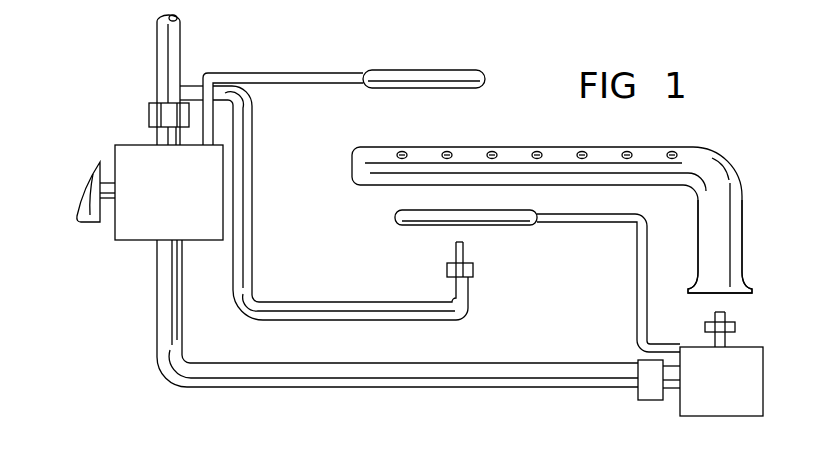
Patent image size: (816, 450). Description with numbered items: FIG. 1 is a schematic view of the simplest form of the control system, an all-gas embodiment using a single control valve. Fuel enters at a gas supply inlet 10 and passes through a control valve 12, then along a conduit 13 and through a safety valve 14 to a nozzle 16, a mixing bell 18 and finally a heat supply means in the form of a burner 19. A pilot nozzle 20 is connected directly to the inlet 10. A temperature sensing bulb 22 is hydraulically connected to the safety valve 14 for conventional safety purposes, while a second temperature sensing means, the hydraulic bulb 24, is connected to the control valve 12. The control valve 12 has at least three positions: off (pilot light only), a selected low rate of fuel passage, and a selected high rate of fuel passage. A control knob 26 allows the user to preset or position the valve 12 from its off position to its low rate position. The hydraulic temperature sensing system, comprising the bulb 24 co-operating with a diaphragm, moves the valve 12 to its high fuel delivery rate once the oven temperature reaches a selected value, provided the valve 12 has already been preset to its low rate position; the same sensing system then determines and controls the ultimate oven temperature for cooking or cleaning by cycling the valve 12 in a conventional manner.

The gas supply inlet 10 is at (160, 68).
The control valve 12 is at (138, 233).
The conduit 13 is at (334, 377).
The safety valve 14 is at (756, 381).
The nozzle 16 is at (727, 313).
The mixing bell 18 is at (738, 238).
The burner 19 is at (509, 153).
The pilot nozzle 20 is at (464, 250).
The temperature sensing bulb 22 is at (417, 221).
The hydraulic bulb 24 is at (426, 74).
The control knob 26 is at (82, 213).